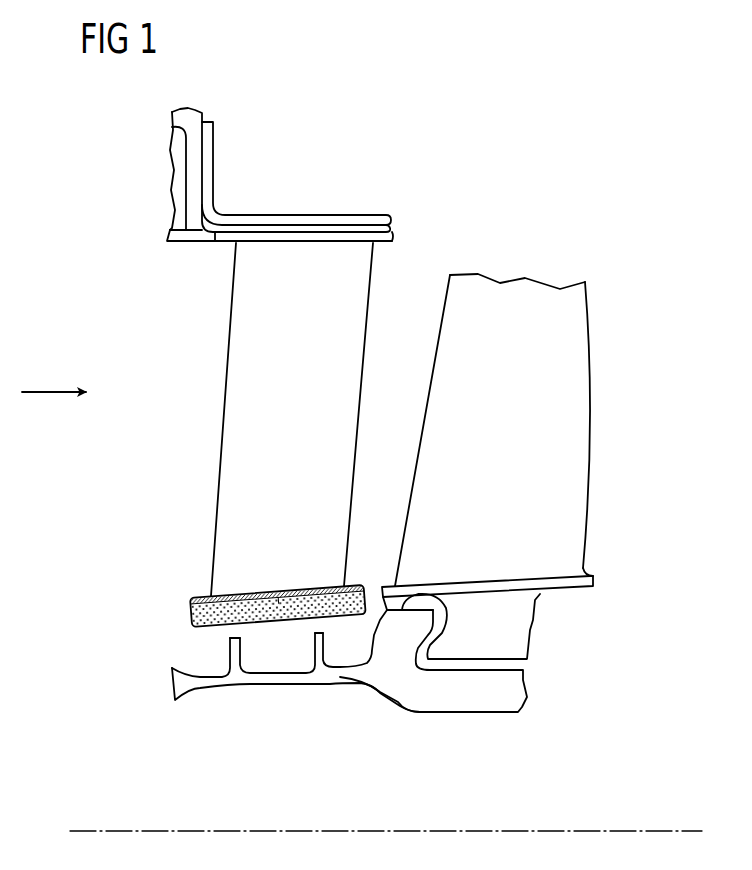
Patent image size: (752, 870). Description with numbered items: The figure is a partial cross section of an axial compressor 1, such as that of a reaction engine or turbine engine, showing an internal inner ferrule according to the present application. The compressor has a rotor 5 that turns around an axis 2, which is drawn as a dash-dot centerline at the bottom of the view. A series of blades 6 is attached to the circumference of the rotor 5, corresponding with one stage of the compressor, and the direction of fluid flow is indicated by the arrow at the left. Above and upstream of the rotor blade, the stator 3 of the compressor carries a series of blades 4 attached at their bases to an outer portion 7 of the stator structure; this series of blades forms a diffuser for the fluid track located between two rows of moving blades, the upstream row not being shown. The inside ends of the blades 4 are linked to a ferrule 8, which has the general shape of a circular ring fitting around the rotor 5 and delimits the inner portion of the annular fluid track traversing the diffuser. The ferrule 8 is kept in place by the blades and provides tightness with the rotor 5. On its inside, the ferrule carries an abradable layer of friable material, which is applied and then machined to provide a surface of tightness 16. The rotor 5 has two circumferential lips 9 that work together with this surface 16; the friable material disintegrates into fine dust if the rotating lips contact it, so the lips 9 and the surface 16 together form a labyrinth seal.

The turbomachine arrangement 1 is at (116, 306).
The axis 2 is at (622, 830).
The stator 3 is at (177, 210).
The blades 4 is at (236, 362).
The rotor 5 is at (566, 620).
The blades 6 is at (584, 363).
The vane carrier flange 7 is at (390, 237).
The ferrule 8 is at (250, 580).
The lips 9 is at (318, 667).
The surface of tightness 16 is at (278, 684).